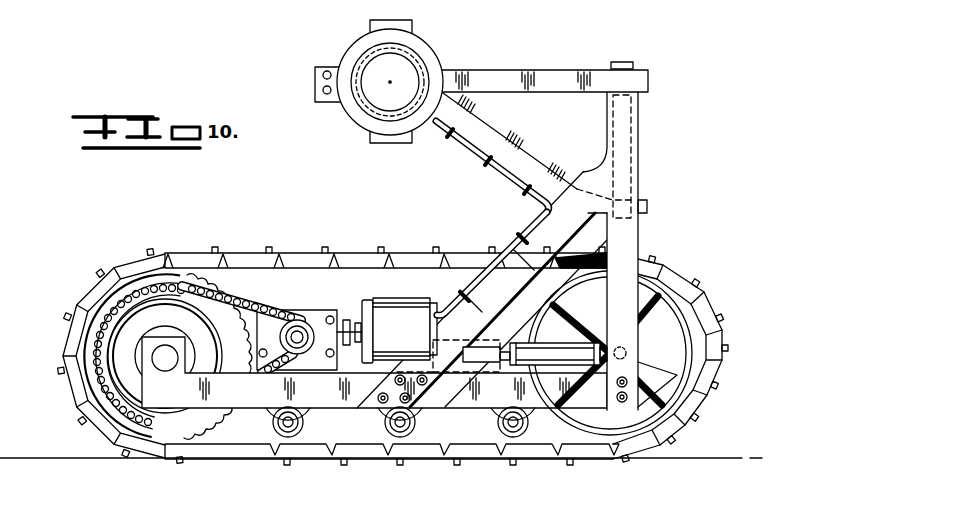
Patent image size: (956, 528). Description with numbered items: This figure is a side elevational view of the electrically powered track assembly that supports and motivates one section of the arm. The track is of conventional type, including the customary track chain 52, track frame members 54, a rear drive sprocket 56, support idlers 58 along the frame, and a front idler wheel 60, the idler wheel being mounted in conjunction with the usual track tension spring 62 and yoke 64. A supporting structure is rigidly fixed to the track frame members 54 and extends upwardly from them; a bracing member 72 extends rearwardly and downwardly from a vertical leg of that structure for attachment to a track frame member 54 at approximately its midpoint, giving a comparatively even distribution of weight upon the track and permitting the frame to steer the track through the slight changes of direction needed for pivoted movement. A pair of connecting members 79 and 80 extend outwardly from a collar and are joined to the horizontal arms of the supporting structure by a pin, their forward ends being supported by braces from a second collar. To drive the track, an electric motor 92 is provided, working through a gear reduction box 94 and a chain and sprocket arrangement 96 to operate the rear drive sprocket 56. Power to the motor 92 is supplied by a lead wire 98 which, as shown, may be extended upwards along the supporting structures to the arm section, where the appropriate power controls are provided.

The track chain 52 is at (413, 250).
The track frame members 54 is at (257, 412).
The rear drive sprocket 56 is at (137, 282).
The support idlers 58 is at (300, 438).
The front idler wheel 60 is at (645, 433).
The track tension spring 62 is at (472, 374).
The yoke 64 is at (547, 362).
The bracing member 72 is at (513, 237).
The connecting member 79 is at (595, 68).
The connecting member 80 is at (520, 142).
The electric motor 92 is at (372, 298).
The gear reduction box 94 is at (310, 312).
The chain and sprocket arrangement 96 is at (108, 303).
The lead wire 98 is at (467, 147).